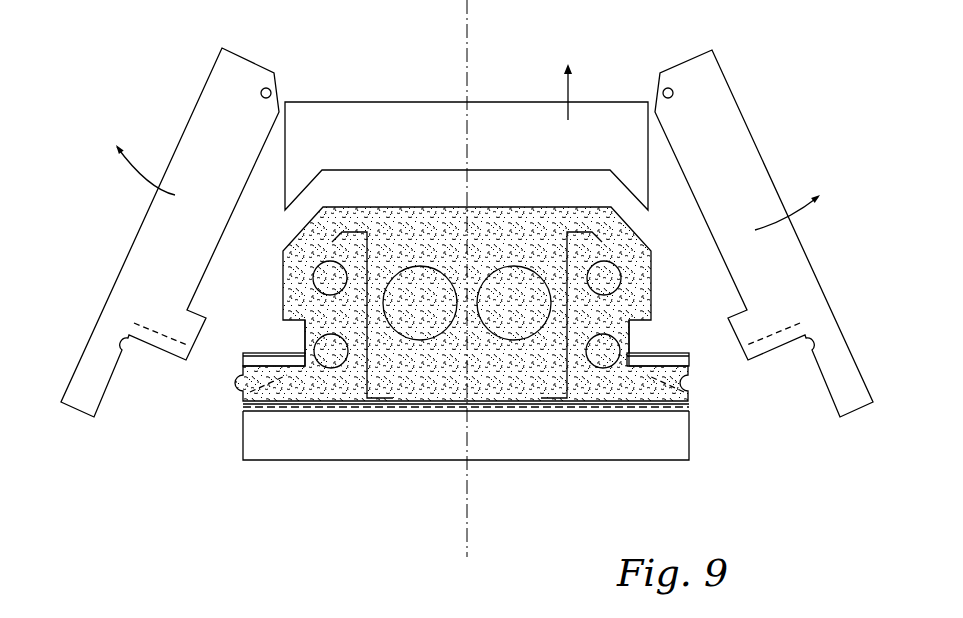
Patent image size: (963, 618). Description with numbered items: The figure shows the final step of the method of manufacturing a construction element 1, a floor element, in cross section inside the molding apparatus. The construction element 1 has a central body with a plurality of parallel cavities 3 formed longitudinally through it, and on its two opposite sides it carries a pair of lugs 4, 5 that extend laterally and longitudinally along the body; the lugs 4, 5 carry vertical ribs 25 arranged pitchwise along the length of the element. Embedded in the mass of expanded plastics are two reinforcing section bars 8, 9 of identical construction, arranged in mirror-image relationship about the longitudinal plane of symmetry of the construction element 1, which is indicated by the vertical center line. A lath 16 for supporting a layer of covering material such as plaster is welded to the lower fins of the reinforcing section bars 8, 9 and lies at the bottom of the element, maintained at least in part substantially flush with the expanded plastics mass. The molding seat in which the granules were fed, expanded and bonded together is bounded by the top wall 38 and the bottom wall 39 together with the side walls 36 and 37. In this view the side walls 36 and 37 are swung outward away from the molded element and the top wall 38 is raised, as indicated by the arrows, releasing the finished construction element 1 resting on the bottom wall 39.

The construction element 1 is at (398, 220).
The cavities 3 is at (317, 338).
The lug 4 is at (258, 365).
The lug 5 is at (690, 348).
The reinforcing section bar 8 is at (365, 251).
The reinforcing section bar 9 is at (560, 240).
The lath 16 is at (430, 410).
The vertical ribs 25 is at (266, 357).
The side wall 36 is at (195, 133).
The side wall 37 is at (763, 182).
The top wall 38 is at (512, 120).
The bottom wall 39 is at (515, 445).